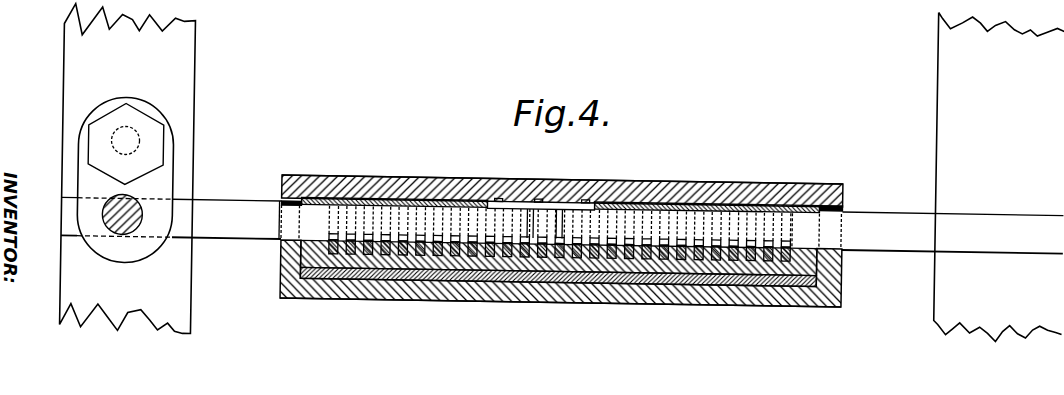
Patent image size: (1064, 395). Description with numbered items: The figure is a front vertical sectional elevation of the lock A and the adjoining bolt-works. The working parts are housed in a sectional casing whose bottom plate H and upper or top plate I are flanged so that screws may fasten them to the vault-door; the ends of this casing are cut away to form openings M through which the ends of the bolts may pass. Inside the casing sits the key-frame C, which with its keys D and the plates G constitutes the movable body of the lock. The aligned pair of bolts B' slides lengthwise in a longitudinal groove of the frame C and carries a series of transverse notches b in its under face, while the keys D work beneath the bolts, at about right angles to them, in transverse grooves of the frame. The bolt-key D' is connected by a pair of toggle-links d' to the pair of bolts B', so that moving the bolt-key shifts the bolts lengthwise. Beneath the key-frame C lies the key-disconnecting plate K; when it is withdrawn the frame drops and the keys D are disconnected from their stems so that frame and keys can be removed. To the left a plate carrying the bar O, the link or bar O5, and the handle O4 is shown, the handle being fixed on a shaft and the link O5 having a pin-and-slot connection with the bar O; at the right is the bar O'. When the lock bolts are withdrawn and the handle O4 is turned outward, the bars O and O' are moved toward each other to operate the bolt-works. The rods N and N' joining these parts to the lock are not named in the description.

The bar O is at (127, 168).
The link or bar O5 is at (126, 180).
The handle O4 is at (129, 214).
The rod N is at (171, 218).
The rod N' is at (953, 233).
The bar O' is at (998, 178).
The lock A is at (562, 242).
The upper or top plate I is at (284, 183).
The plates G is at (400, 200).
The openings M is at (844, 200).
The aligned pair of bolts B' is at (561, 226).
The frame C is at (558, 258).
The key-disconnecting plate K is at (386, 276).
The bottom plate H is at (292, 272).
The transverse notches b is at (560, 233).
The keys D is at (548, 264).
The toggle-links d' is at (541, 183).
The bolt-key D' is at (544, 224).